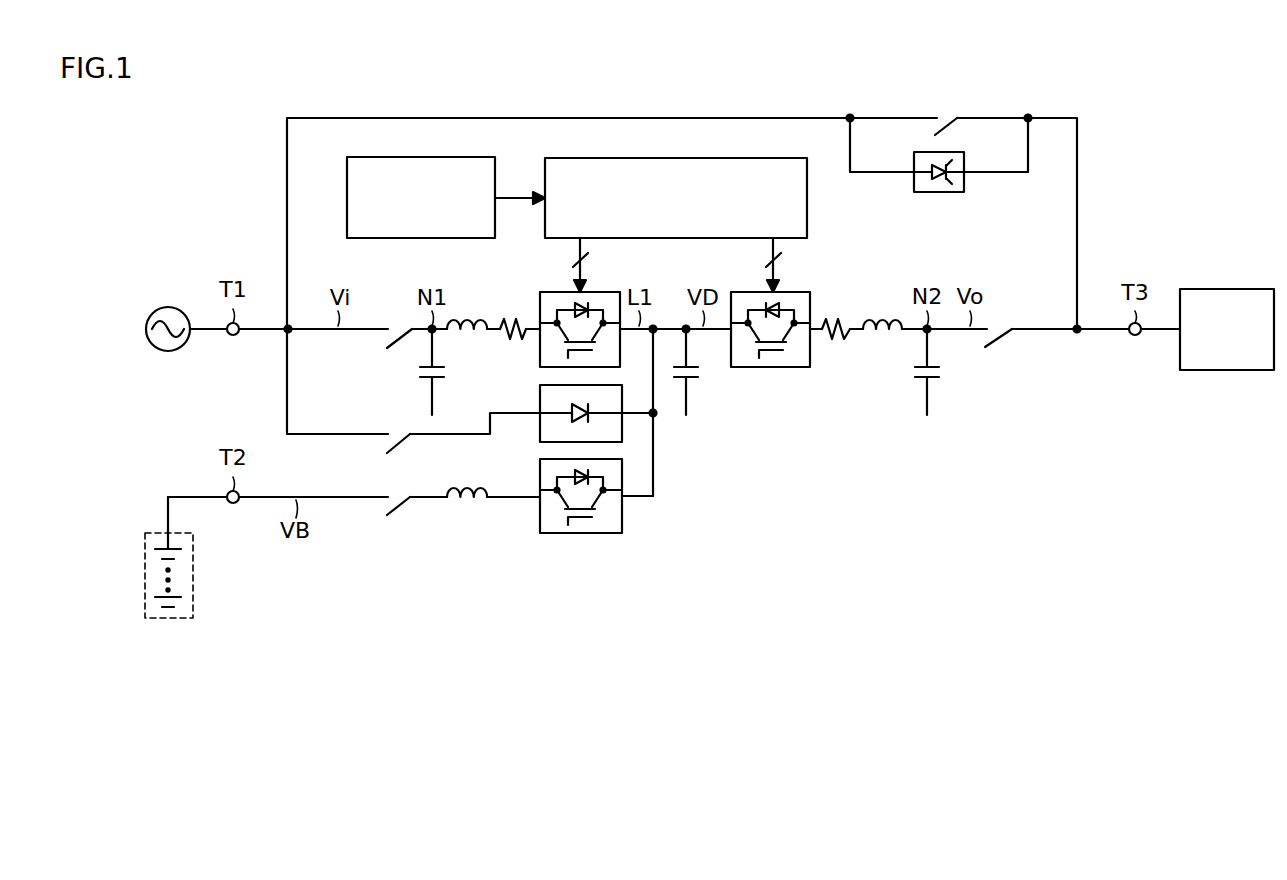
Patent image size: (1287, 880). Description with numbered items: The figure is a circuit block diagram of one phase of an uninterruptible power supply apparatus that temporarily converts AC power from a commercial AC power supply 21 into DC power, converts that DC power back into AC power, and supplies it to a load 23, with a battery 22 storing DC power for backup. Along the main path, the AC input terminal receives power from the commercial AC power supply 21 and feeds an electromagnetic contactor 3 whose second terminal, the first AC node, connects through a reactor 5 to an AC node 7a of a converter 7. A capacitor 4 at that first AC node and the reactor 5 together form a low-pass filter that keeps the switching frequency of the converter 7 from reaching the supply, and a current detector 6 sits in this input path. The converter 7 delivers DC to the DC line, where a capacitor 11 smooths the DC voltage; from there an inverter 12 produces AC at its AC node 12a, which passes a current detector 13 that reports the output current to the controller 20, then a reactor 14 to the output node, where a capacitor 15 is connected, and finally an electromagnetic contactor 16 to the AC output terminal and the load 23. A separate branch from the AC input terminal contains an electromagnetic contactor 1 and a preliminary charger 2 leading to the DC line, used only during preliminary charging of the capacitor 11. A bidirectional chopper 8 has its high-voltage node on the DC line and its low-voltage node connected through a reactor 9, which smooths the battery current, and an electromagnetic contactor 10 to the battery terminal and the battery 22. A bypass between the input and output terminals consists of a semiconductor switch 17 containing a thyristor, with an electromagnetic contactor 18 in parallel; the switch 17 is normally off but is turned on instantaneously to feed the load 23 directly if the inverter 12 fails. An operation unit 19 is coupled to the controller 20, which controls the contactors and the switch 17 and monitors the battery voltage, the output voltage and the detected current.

The electromagnetic contactor 1 is at (403, 447).
The preliminary charger 2 is at (540, 427).
The electromagnetic contactor 3 is at (404, 341).
The capacitor 4 is at (440, 378).
The reactor 5 is at (472, 334).
The current detector 6 is at (506, 339).
The converter 7 is at (554, 292).
The AC node of converter 7a is at (537, 323).
The bidirectional chopper 8 is at (596, 533).
The reactor 9 is at (472, 500).
The electromagnetic contactor 10 is at (404, 508).
The capacitor 11 is at (698, 379).
The inverter 12 is at (777, 368).
The AC node of inverter 12a is at (822, 326).
The current detector 13 is at (834, 339).
The reactor 14 is at (889, 334).
The capacitor 15 is at (938, 378).
The electromagnetic contactor 16 is at (1000, 340).
The semiconductor switch 17 is at (942, 193).
The electromagnetic contactor 18 is at (952, 124).
The operation unit 19 is at (452, 157).
The controller 20 is at (762, 158).
The commercial AC power supply 21 is at (163, 308).
The battery 22 is at (149, 533).
The load 23 is at (1233, 289).